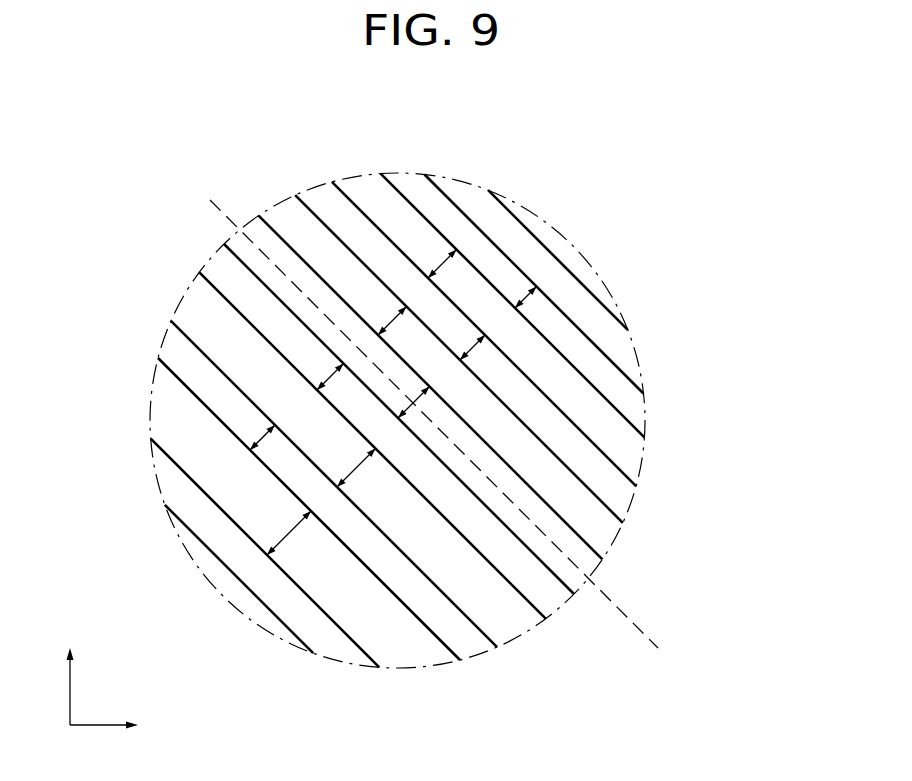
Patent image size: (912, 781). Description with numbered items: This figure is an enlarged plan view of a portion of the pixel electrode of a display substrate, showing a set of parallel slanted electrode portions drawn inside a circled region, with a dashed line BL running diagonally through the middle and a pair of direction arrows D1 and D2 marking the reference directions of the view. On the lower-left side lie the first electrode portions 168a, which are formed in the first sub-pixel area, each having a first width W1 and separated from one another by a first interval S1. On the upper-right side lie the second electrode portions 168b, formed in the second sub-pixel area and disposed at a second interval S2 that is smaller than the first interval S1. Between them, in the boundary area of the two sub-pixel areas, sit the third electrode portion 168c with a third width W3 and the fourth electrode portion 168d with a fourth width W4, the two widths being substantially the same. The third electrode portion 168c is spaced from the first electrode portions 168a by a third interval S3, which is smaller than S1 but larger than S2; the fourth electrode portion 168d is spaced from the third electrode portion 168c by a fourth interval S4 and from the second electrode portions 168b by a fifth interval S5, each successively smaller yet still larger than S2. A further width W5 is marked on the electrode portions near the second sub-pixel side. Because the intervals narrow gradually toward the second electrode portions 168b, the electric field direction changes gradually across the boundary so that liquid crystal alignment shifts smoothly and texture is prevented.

The first electrode portions 168a is at (410, 598).
The second electrode portions 168b is at (627, 362).
The third electrode portion 168c is at (548, 602).
The fourth electrode portion 168d is at (605, 540).
The boundary line BL is at (658, 662).
The first width W1 is at (255, 429).
The third width W3 is at (321, 366).
The fourth width W4 is at (382, 310).
The fifth width W5 is at (434, 258).
The first interval S1 is at (290, 536).
The second interval S2 is at (534, 309).
The third interval S3 is at (359, 472).
The fourth interval S4 is at (420, 412).
The fifth interval S5 is at (480, 357).
The first direction D1 is at (120, 727).
The second direction D2 is at (67, 676).